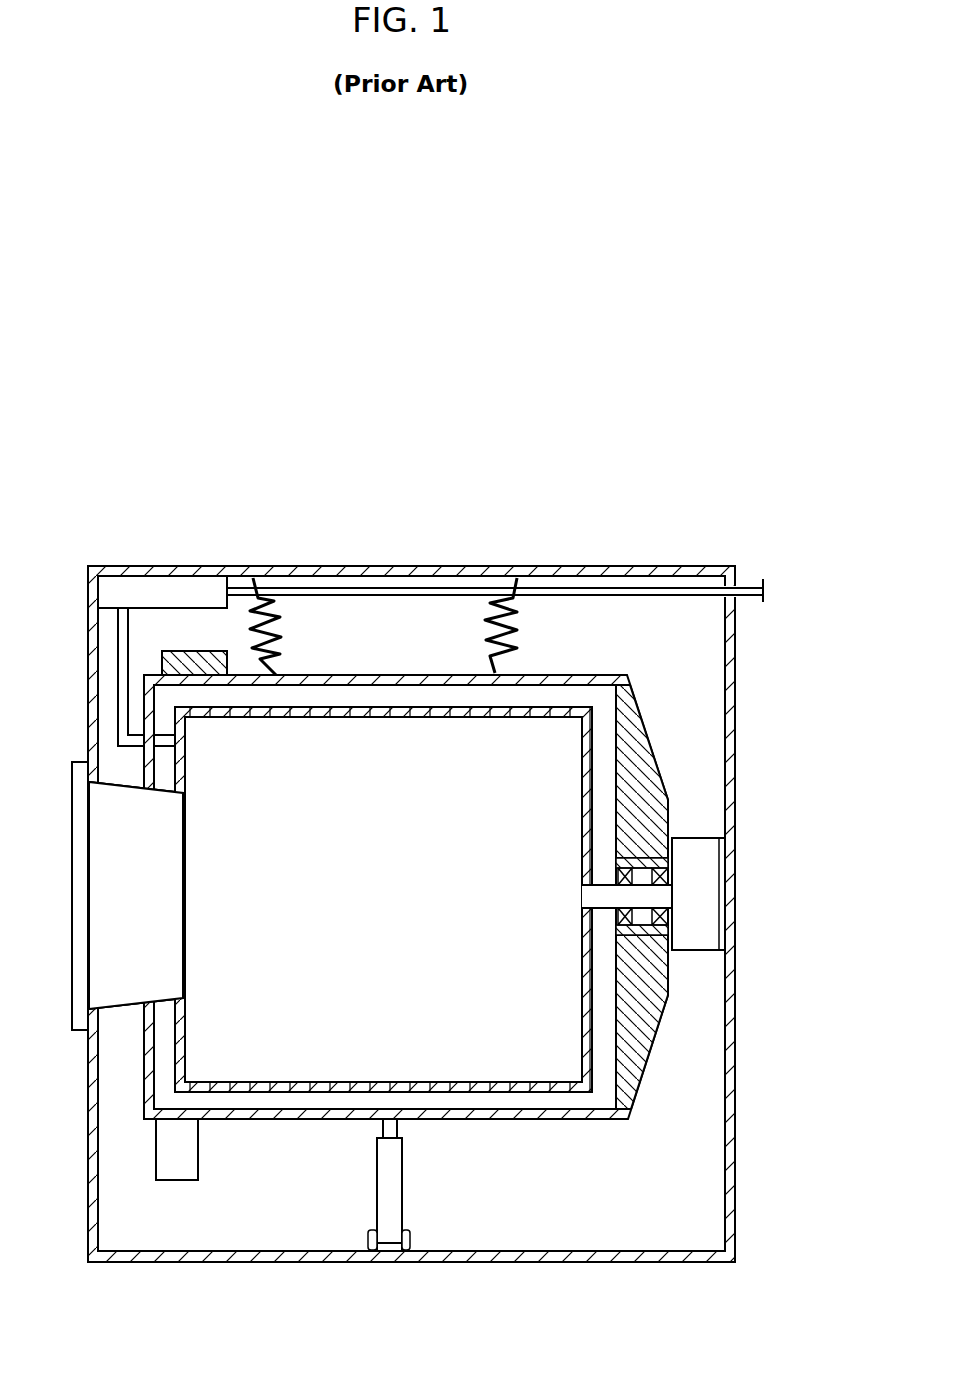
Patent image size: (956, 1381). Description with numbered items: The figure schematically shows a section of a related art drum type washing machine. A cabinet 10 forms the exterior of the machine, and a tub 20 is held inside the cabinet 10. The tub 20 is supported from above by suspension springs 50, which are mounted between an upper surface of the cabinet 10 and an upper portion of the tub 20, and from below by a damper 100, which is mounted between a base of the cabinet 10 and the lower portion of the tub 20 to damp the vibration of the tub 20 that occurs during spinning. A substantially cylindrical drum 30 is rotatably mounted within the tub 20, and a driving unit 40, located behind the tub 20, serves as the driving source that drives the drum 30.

The cabinet 10 is at (662, 567).
The tub 20 is at (575, 675).
The drum 30 is at (367, 709).
The driving unit 40 is at (710, 903).
The suspension springs 50 is at (497, 627).
The damper 100 is at (388, 1222).